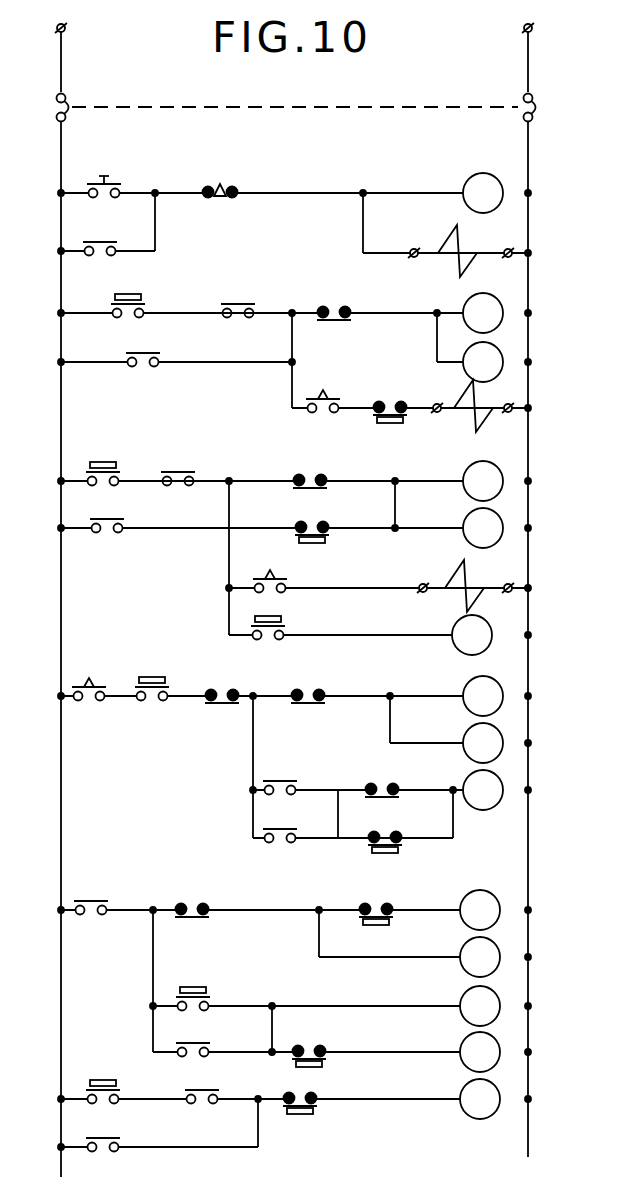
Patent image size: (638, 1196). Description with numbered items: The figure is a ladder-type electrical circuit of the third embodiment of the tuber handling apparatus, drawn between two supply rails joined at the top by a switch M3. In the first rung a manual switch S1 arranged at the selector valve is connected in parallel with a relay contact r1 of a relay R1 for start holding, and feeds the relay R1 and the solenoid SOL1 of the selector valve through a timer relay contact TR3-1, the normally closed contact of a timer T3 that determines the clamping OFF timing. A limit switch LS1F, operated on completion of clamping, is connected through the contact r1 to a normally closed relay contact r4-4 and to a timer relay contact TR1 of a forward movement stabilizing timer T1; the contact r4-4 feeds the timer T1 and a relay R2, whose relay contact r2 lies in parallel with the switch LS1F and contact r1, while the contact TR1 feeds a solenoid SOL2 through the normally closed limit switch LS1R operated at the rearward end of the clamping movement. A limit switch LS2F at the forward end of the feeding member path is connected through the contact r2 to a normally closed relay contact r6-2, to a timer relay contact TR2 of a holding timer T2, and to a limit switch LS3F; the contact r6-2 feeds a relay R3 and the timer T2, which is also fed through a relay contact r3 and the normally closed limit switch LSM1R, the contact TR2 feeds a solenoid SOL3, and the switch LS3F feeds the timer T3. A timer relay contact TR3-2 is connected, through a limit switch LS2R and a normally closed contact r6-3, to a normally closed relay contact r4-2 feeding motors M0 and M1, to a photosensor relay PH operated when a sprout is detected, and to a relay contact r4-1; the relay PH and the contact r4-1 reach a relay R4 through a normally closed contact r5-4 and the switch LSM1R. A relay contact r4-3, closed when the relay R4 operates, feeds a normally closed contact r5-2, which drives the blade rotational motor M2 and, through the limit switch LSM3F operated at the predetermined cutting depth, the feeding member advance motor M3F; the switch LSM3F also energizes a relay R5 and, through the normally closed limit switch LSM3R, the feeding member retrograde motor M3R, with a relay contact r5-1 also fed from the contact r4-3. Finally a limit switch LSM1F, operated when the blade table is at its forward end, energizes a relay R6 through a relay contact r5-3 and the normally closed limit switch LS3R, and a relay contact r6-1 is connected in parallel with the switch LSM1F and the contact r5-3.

The main switch M3 is at (313, 107).
The manual switch S1 is at (104, 173).
The timer relay contact TR3-1 is at (224, 179).
The relay R1 is at (483, 193).
The relay contact r1 is at (169, 268).
The solenoid SOL1 is at (461, 250).
The limit switch LS1F is at (129, 296).
The relay contact r4-4 is at (332, 300).
The relay R2 is at (483, 313).
The forward movement stabilizing timer T1 is at (483, 362).
The relay contact r2 is at (160, 407).
The timer relay contact TR1 is at (323, 390).
The limit switch LS1R is at (390, 399).
The solenoid SOL2 is at (476, 405).
The limit switch LS2F is at (105, 465).
The relay contact r6-2 is at (307, 468).
The relay R3 is at (483, 481).
The relay contact r3 is at (107, 514).
The limit switch LSM1R is at (350, 674).
The timer T2 is at (483, 528).
The timer relay contact TR2 is at (271, 570).
The solenoid SOL3 is at (467, 585).
The limit switch LS3F is at (271, 618).
The timer T3 is at (472, 635).
The timer relay contact TR3-2 is at (88, 677).
The limit switch LS2R is at (155, 677).
The relay contact r6-3 is at (224, 682).
The relay contact r4-2 is at (306, 682).
The motor M0 is at (483, 696).
The motor M1 is at (483, 743).
The photosensor relay PH is at (280, 776).
The relay contact r4-1 is at (278, 823).
The relay contact r5-4 is at (380, 776).
The relay R4 is at (483, 790).
The relay contact r4-3 is at (89, 895).
The relay contact r5-2 is at (192, 896).
The limit switch LSM3F is at (284, 943).
The feeding member advance motor M3F is at (480, 910).
The blade rotational motor M2 is at (480, 957).
The relay R5 is at (480, 1006).
The relay contact r5-1 is at (191, 1038).
The limit switch LSM3R is at (313, 1042).
The feeding member retrograde motor M3R is at (480, 1052).
The limit switch LSM1F is at (104, 1083).
The relay contact r5-3 is at (200, 1084).
The limit switch LS3R is at (302, 1088).
The relay R6 is at (480, 1099).
The relay contact r6-1 is at (103, 1133).